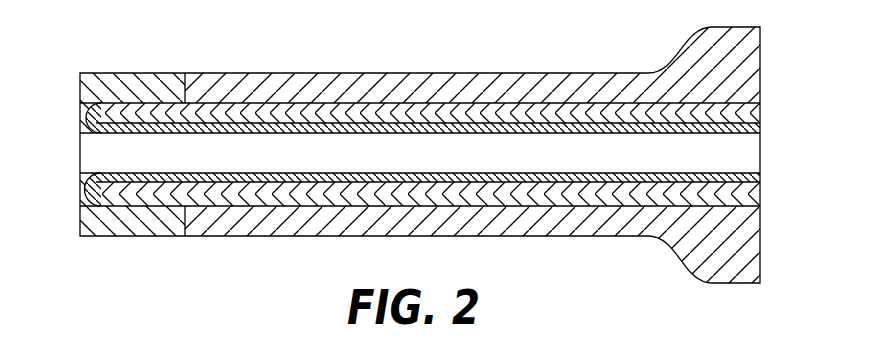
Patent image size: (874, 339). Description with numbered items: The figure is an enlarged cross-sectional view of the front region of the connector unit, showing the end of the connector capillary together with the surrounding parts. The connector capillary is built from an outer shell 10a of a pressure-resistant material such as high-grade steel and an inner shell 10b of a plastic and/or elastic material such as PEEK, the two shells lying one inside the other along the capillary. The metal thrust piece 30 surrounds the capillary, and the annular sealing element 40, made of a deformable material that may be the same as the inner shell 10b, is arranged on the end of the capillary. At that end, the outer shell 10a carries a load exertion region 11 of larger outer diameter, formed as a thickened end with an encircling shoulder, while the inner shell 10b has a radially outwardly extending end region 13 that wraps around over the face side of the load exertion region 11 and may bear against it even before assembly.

The outer shell 10a is at (761, 104).
The inner shell 10b is at (761, 174).
The load exertion region 11 is at (82, 112).
The end region 13 is at (82, 197).
The thrust piece 30 is at (402, 73).
The sealing element 40 is at (122, 73).